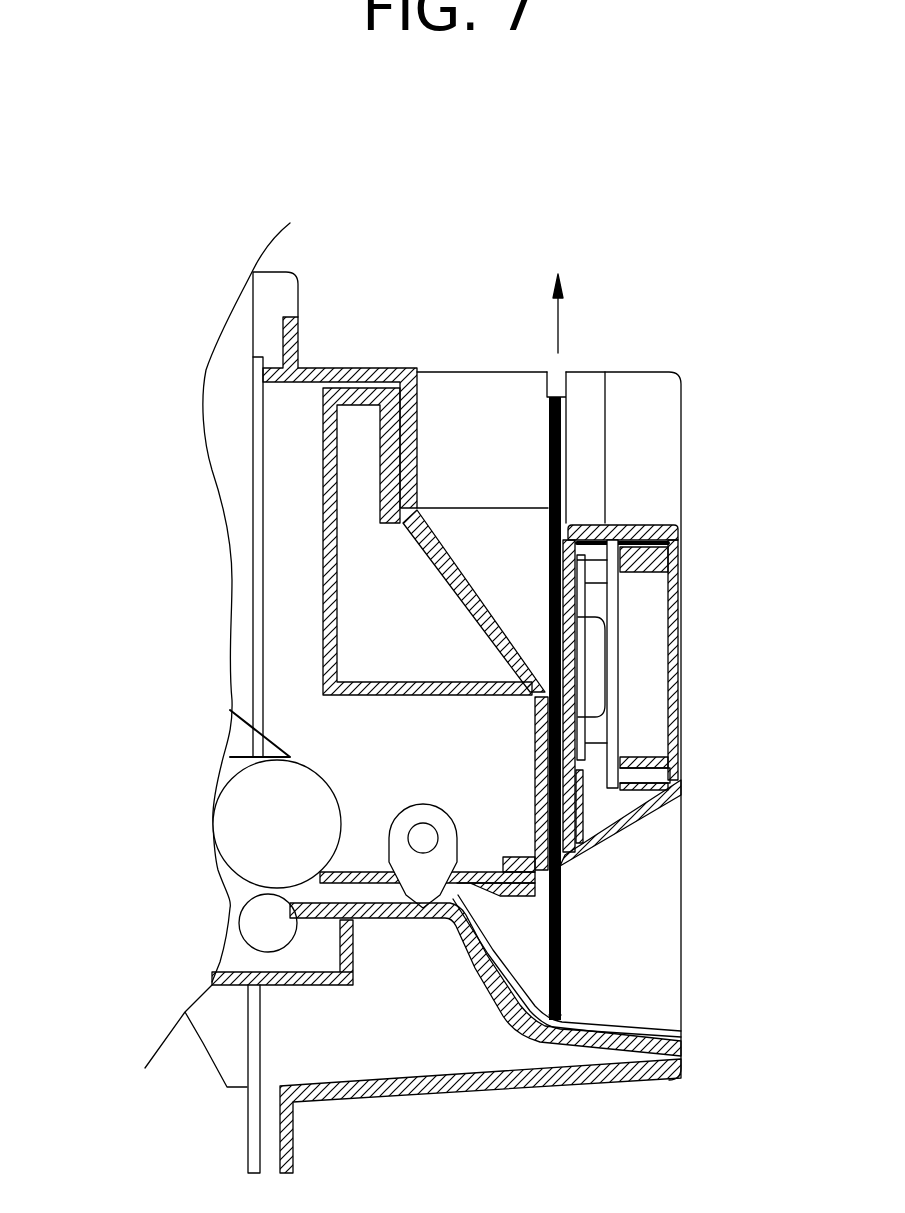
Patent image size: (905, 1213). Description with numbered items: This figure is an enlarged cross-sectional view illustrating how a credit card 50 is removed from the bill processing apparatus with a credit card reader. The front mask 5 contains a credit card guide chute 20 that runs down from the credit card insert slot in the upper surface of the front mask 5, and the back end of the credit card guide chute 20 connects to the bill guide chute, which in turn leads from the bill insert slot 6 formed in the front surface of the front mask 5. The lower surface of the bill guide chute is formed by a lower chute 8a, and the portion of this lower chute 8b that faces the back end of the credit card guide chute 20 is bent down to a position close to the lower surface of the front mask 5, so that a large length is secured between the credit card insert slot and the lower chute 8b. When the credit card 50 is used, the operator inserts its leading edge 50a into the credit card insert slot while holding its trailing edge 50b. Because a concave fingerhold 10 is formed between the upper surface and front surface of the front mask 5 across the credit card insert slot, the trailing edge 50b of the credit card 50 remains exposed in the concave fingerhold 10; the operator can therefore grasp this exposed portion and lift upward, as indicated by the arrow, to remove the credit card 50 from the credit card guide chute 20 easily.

The front mask 5 is at (640, 370).
The concave fingerhold 10 is at (470, 415).
The credit card guide chute 20 is at (535, 760).
The credit card 50 is at (600, 655).
The leading edge 50a is at (553, 1045).
The trailing edge 50b is at (565, 453).
The bill insert slot 6 is at (640, 824).
The lower chute 8a is at (513, 947).
The lower chute 8b is at (612, 1022).